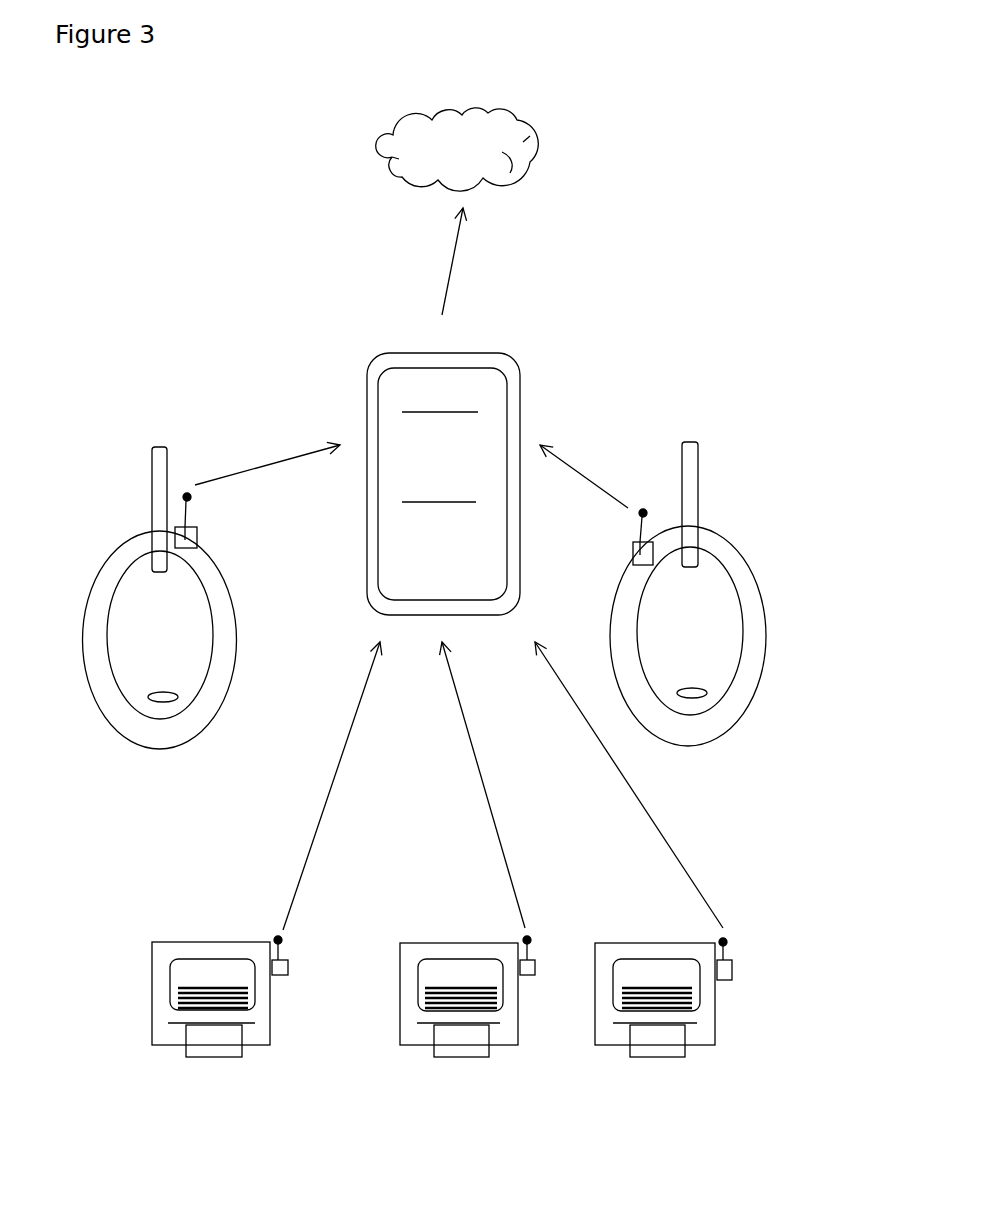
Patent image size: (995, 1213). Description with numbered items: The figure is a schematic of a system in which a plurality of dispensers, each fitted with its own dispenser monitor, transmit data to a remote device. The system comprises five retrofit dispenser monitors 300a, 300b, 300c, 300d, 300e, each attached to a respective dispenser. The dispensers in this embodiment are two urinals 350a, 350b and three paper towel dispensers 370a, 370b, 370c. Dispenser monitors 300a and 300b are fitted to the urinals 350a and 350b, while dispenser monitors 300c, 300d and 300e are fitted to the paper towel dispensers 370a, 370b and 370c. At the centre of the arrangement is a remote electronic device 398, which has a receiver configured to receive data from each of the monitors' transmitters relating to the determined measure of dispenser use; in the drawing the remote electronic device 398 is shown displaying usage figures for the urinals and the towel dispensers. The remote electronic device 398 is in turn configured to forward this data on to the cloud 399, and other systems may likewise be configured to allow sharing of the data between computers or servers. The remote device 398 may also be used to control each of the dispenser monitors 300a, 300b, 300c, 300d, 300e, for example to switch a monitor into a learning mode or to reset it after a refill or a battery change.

The cloud 399 is at (423, 150).
The remote electronic device 398 is at (363, 371).
The retrofit dispenser monitor 300a is at (182, 494).
The retrofit dispenser monitor 300b is at (644, 509).
The retrofit dispenser monitor 300c is at (278, 975).
The retrofit dispenser monitor 300d is at (527, 975).
The retrofit dispenser monitor 300e is at (723, 980).
The urinal 350a is at (103, 563).
The urinal 350b is at (742, 552).
The paper towel dispenser 370a is at (168, 1027).
The paper towel dispenser 370b is at (425, 1040).
The paper towel dispenser 370c is at (617, 1042).